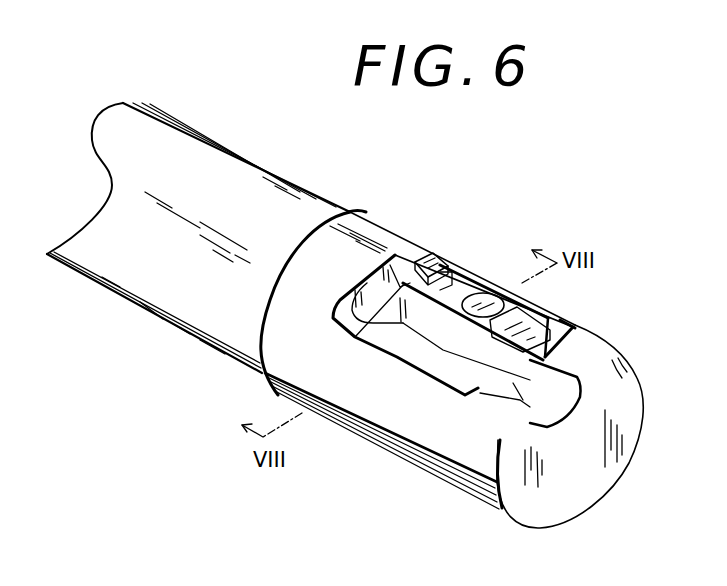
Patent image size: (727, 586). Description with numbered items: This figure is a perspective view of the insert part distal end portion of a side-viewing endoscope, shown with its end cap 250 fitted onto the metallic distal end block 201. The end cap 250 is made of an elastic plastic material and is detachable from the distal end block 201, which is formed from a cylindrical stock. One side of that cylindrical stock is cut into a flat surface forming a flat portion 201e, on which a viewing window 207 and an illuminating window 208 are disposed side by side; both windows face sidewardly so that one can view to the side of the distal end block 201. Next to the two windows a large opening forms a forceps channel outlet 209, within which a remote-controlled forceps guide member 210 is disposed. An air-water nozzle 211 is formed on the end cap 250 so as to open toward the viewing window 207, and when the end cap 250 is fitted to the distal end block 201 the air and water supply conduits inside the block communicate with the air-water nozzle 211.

The distal end block 201 is at (462, 330).
The flat portion 201e is at (450, 283).
The viewing window 207 is at (492, 300).
The illuminating window 208 is at (563, 325).
The forceps channel outlet 209 is at (362, 333).
The remote-controlled forceps guide member 210 is at (517, 390).
The air-water nozzle 211 is at (455, 262).
The end cap 250 is at (448, 478).